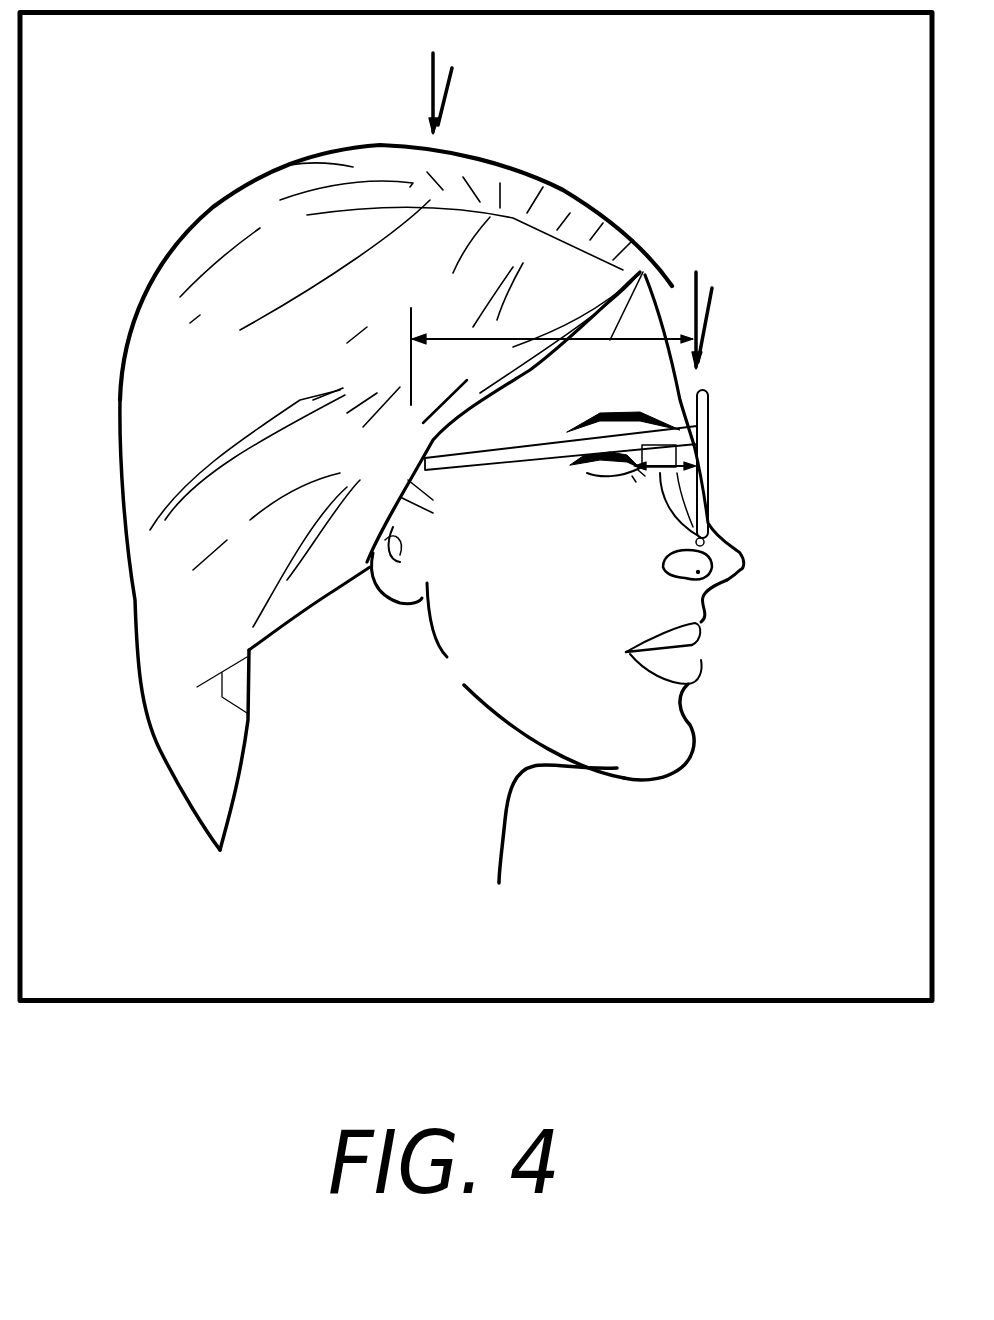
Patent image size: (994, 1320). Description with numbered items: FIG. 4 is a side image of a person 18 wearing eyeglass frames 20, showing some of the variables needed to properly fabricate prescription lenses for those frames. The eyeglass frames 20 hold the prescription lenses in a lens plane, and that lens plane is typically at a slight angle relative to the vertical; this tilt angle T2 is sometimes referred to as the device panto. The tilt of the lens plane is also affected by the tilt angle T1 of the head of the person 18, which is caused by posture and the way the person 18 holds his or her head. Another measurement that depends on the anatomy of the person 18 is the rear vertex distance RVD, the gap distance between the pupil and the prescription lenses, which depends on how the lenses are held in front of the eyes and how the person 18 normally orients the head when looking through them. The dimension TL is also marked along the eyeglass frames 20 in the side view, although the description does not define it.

The person 18 is at (580, 193).
The eyeglass frames 20 is at (712, 432).
The tilt angle of the person's head T1 is at (448, 88).
The tilt angle of the lens plane T2 is at (708, 303).
The temple length TL is at (643, 273).
The rear vertex distance RVD is at (743, 555).